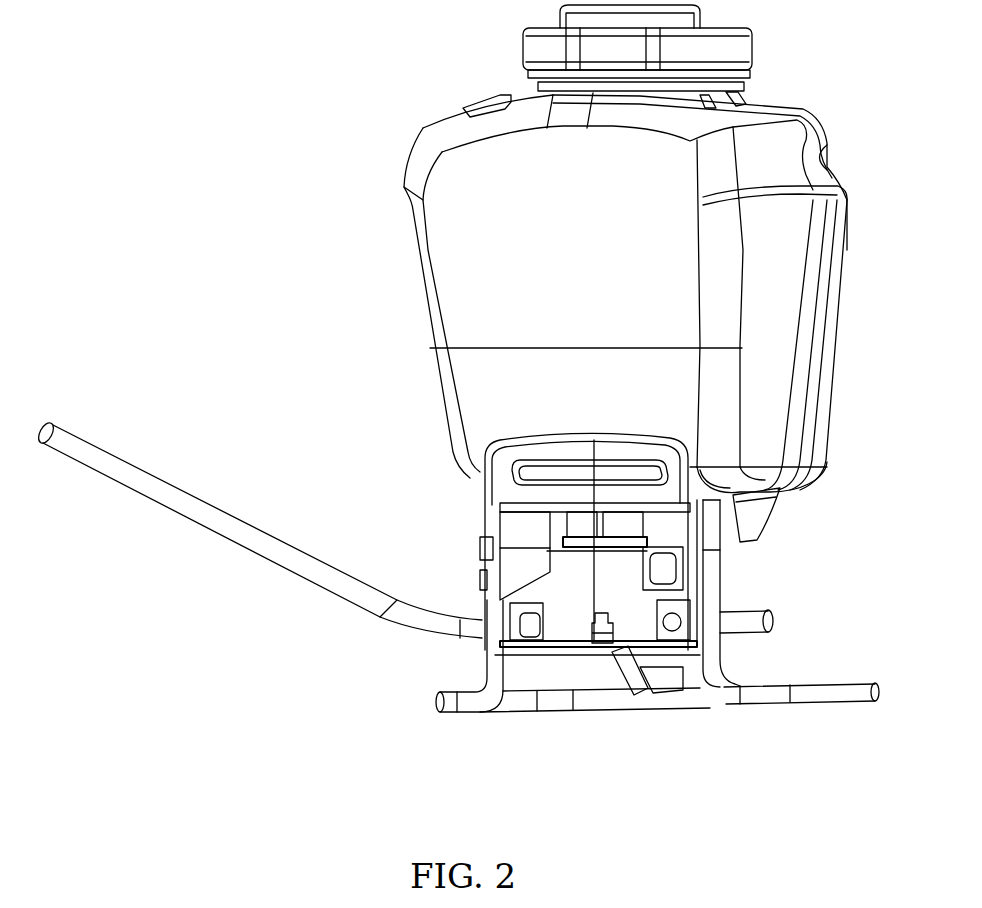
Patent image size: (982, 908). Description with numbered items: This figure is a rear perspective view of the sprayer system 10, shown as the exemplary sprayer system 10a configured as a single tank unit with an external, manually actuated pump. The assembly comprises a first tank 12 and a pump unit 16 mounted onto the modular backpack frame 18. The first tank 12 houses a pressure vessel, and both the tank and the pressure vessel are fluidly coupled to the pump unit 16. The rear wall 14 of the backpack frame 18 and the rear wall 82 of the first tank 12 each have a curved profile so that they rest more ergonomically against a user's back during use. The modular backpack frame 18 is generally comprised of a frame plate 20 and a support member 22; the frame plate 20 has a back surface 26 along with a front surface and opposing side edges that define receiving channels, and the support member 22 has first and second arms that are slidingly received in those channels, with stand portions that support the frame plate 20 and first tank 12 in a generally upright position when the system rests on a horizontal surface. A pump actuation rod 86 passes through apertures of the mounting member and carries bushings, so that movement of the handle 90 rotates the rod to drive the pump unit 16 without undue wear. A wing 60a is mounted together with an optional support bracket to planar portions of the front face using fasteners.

The sprayer system 10 is at (384, 62).
The sprayer system 10a is at (804, 106).
The first tank 12 is at (828, 156).
The rear wall 82 is at (462, 290).
The back surface 26 is at (572, 442).
The rear wall 14 is at (540, 498).
The frame plate 20 is at (566, 632).
The support member 22 is at (462, 716).
The modular backpack frame 18 is at (704, 600).
The pump actuation rod 86 is at (740, 634).
The wing 60a is at (762, 520).
The pump unit 16 is at (668, 682).
The handle 90 is at (212, 504).